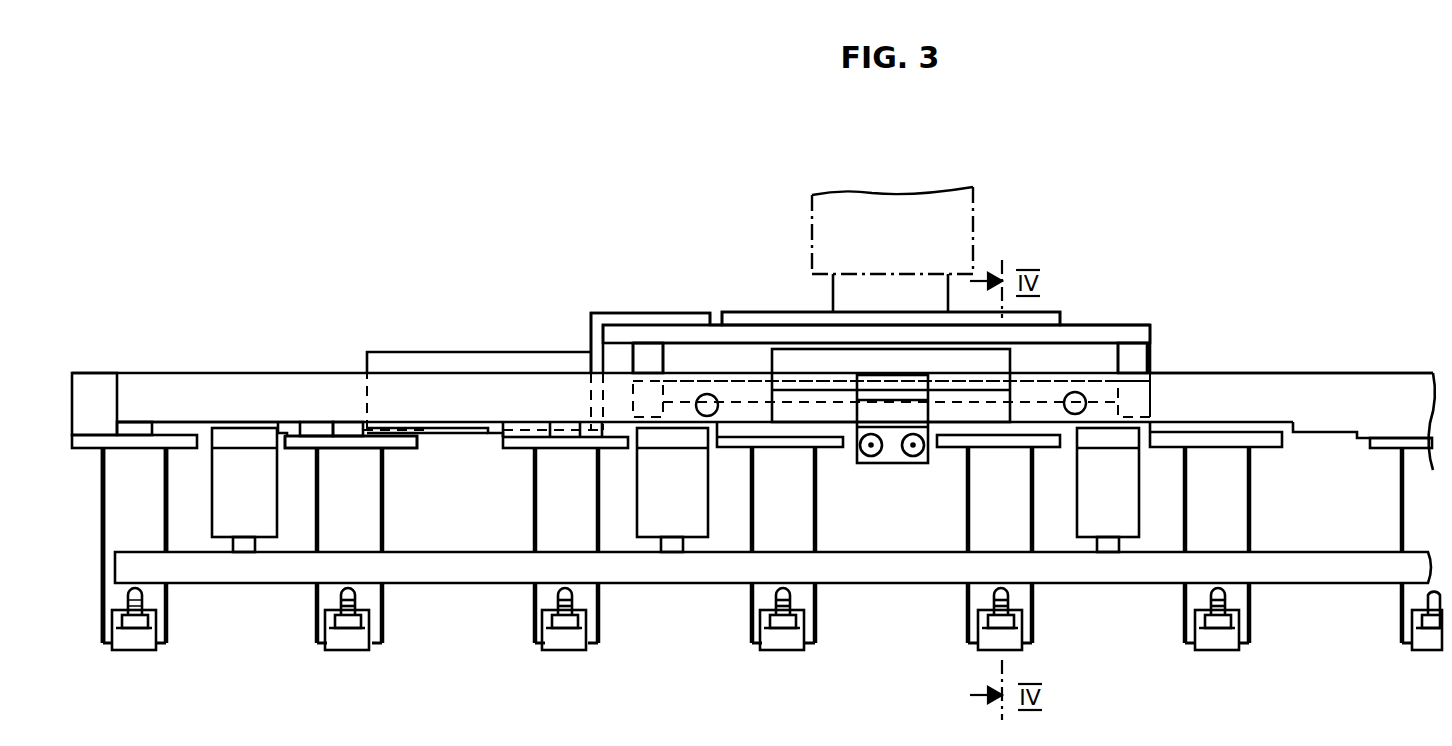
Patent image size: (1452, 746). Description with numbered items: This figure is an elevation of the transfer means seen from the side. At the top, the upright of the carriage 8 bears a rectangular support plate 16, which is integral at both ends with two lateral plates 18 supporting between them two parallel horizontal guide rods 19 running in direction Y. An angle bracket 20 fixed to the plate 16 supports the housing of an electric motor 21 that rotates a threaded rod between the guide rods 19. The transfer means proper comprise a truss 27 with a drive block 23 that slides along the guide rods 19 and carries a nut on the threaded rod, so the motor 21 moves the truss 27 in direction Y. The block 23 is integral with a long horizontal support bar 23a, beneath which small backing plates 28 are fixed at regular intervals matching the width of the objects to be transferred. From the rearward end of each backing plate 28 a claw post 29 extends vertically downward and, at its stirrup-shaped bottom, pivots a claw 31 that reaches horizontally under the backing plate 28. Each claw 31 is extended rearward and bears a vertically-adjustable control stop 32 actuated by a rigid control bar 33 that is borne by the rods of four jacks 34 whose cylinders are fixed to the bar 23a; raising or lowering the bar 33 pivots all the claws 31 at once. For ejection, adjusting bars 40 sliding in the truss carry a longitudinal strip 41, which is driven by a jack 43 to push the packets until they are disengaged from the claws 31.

The carriage 8 is at (915, 235).
The rectangular support plate 16 is at (1120, 330).
The lateral plate 18 is at (643, 357).
The guide rod 19 is at (747, 380).
The angle bracket 20 is at (643, 320).
The electric motor 21 is at (417, 360).
The drive block 23 is at (783, 343).
The support bar 23a is at (1270, 420).
The truss 27 is at (175, 414).
The backing plate 28 is at (300, 437).
The claw post 29 is at (97, 550).
The claw 31 is at (133, 640).
The control stop 32 is at (148, 605).
The control bar 33 is at (272, 565).
The jack 34 is at (262, 505).
The adjusting bar 40 is at (712, 411).
The strip 41 is at (1404, 409).
The jack 43 is at (887, 435).